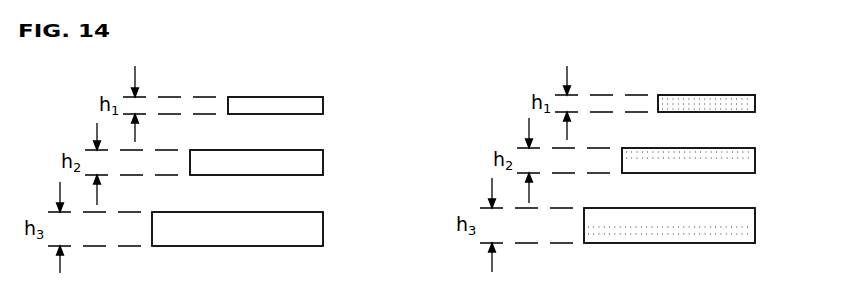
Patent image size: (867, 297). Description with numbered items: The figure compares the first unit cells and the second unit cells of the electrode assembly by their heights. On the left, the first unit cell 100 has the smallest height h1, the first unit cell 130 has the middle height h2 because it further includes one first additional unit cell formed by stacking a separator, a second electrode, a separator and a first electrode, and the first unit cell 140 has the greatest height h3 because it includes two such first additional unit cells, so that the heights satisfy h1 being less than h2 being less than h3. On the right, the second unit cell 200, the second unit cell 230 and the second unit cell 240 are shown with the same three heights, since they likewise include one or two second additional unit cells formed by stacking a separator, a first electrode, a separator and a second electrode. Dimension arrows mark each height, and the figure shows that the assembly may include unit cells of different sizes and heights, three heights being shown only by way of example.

The first unit cell 100 is at (323, 105).
The first unit cell 130 is at (323, 162).
The first unit cell 140 is at (323, 229).
The second unit cell 200 is at (755, 103).
The second unit cell 230 is at (755, 160).
The second unit cell 240 is at (755, 225).